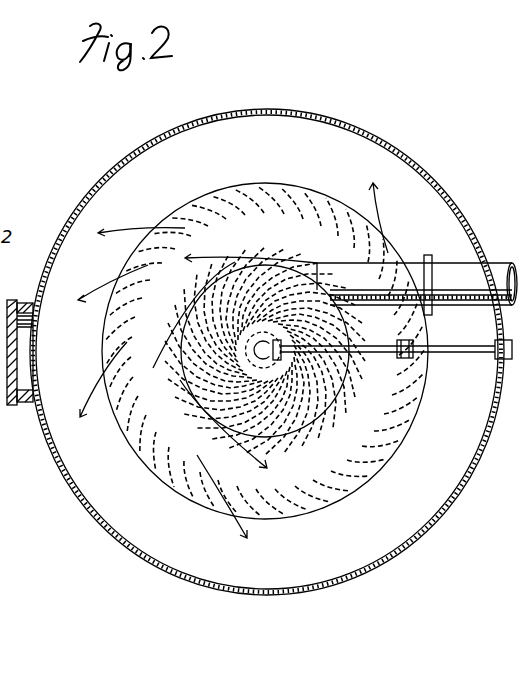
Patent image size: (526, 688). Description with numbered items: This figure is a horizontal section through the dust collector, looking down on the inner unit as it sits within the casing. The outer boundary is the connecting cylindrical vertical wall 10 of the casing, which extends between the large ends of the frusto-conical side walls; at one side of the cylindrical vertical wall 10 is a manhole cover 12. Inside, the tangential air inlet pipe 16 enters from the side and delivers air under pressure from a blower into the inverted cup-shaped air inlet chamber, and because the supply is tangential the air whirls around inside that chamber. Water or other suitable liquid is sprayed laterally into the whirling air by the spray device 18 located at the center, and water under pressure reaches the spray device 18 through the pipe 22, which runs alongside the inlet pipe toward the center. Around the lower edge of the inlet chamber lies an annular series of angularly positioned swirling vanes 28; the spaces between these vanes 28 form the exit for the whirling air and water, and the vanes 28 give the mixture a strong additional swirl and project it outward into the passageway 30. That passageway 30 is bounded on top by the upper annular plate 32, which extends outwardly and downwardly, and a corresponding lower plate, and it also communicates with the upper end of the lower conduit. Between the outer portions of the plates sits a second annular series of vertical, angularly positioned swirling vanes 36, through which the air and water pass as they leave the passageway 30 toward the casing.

The cylindrical vertical wall 10 is at (493, 391).
The manhole cover 12 is at (12, 352).
The tangential air inlet pipe 16 is at (417, 285).
The spray device 18 is at (277, 336).
The pipe 22 is at (430, 350).
The swirling vanes 28 is at (197, 423).
The passageway 30 is at (148, 395).
The upper annular plate 32 is at (276, 233).
The swirling vanes 36 is at (246, 200).